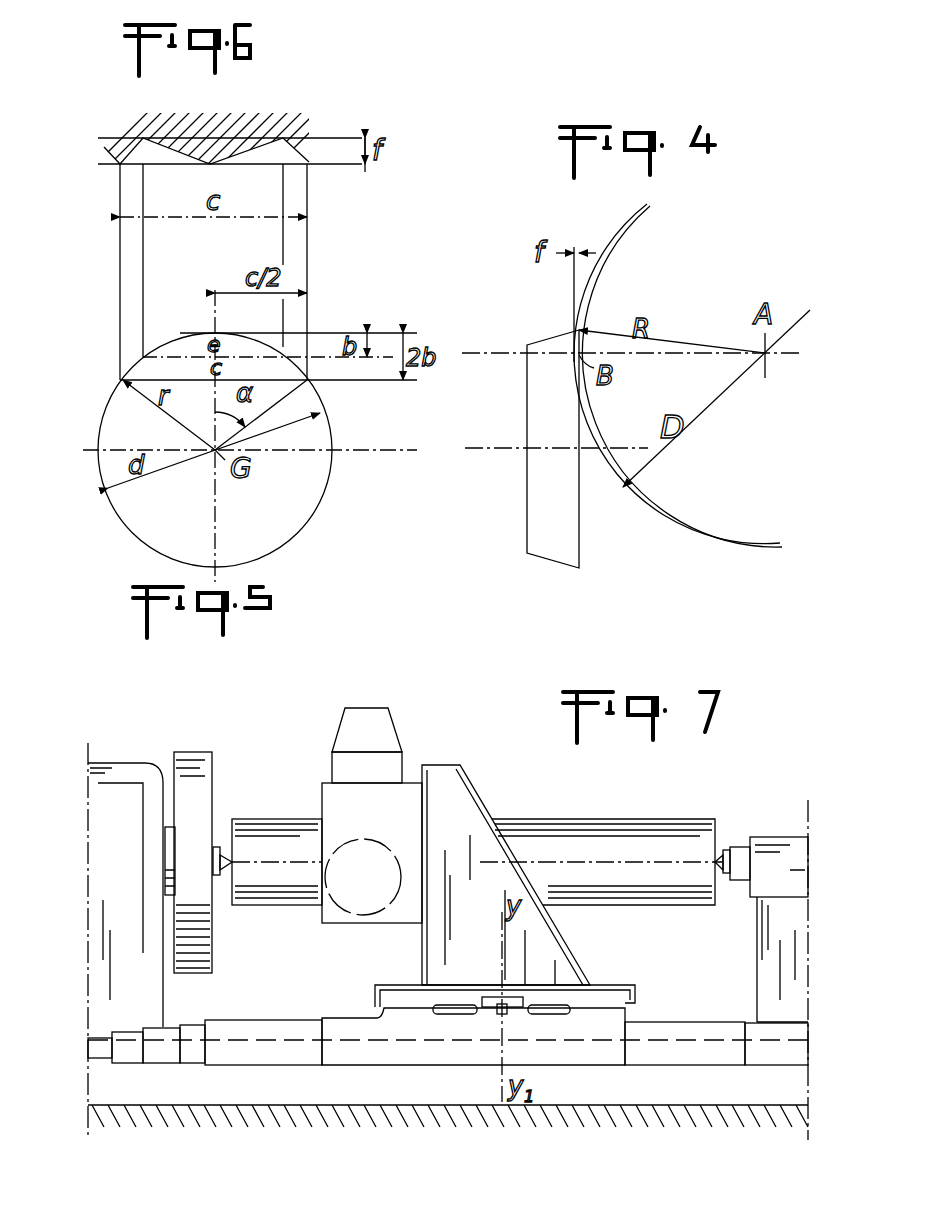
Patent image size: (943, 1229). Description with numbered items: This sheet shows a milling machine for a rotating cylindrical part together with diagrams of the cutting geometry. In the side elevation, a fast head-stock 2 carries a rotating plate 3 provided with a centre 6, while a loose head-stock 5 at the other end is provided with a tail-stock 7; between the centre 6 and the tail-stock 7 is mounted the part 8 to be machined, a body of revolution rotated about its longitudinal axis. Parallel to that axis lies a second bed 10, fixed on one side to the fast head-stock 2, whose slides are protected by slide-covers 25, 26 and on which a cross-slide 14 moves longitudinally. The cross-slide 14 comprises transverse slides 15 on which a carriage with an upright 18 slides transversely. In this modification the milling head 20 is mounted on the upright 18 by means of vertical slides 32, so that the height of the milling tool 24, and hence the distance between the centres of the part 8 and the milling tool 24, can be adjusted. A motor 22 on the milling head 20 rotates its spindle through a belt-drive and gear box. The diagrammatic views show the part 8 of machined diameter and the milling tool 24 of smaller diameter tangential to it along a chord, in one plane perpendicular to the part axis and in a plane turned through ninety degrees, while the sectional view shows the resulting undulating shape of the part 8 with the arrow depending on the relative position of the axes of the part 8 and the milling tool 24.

In FIG. 7, the fast head-stock 2 is at (125, 895).
In FIG. 7, the rotating plate 3 is at (192, 762).
In FIG. 7, the loose head-stock 5 is at (765, 967).
In FIG. 7, the centre 6 is at (222, 848).
In FIG. 7, the tail-stock 7 is at (727, 846).
In FIG. 6, the part to be machined 8 is at (287, 121).
In FIG. 4, the part to be machined 8 is at (752, 530).
In FIG. 7, the part to be machined 8 is at (265, 890).
In FIG. 7, the second bed 10 is at (605, 1085).
In FIG. 7, the cross-slide 14 is at (387, 1055).
In FIG. 7, the transverse slides 15 is at (617, 990).
In FIG. 7, the upright 18 is at (468, 806).
In FIG. 7, the milling head 20 is at (322, 793).
In FIG. 7, the motor 22 is at (362, 718).
In FIG. 6, the milling tool 24 is at (317, 498).
In FIG. 4, the milling tool 24 is at (537, 503).
In FIG. 7, the milling tool 24 is at (337, 910).
In FIG. 7, the slide-cover 25 is at (262, 1055).
In FIG. 7, the slide-cover 26 is at (698, 1055).
In FIG. 7, the vertical slides 32 is at (412, 868).